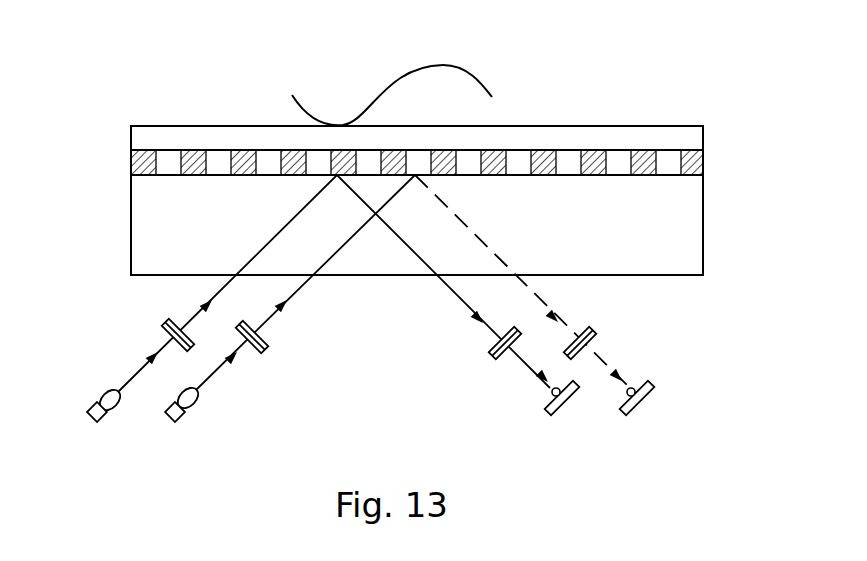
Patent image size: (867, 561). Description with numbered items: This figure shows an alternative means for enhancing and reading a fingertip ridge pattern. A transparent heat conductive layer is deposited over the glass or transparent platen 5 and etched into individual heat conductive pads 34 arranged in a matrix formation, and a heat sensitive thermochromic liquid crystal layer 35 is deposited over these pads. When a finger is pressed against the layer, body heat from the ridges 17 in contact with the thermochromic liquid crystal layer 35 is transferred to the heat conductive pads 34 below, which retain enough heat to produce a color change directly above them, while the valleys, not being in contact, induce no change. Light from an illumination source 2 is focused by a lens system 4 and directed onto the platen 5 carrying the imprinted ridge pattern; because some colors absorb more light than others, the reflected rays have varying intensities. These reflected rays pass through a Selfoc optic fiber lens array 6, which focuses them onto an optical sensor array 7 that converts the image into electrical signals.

The illumination source 2 is at (102, 390).
The lens system 4 is at (158, 325).
The glass or transparent platen 5 is at (703, 235).
The Selfoc optic fiber lens array 6 is at (490, 353).
The optical sensor array 7 is at (543, 397).
The ridge pattern 17 is at (482, 80).
The heat conductive pads 34 is at (703, 155).
The thermochromic liquid crystal layer 35 is at (703, 125).